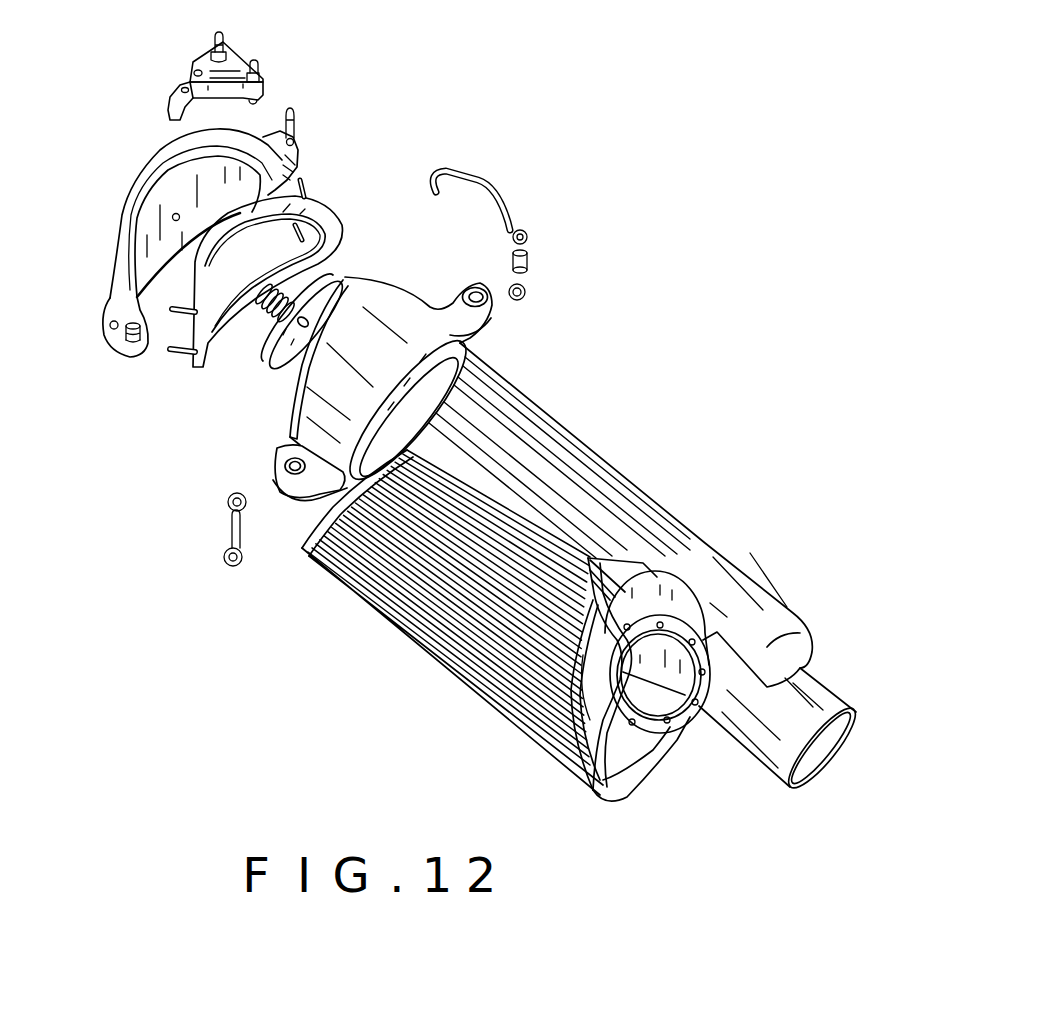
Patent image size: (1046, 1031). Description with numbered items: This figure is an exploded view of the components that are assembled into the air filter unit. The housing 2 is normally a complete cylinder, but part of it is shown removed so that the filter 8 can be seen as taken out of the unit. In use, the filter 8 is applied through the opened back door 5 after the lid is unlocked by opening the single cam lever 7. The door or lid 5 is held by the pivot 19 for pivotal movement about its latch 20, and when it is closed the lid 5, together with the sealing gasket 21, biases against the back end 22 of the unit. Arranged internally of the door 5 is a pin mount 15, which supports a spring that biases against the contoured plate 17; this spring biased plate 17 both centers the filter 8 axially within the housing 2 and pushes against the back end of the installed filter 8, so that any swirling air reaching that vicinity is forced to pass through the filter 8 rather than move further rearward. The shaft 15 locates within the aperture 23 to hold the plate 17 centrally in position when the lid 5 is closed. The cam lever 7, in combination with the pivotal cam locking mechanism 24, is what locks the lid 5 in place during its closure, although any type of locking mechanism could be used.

The housing 2 is at (637, 500).
The door 5 is at (123, 263).
The cam lever 7 is at (505, 202).
The filter 8 is at (450, 660).
The pin mount 15 is at (253, 313).
The contoured plate 17 is at (337, 280).
The pivot 19 is at (230, 533).
The latch 20 is at (125, 352).
The sealing gasket 21 is at (322, 218).
The back end 22 is at (288, 407).
The aperture 23 is at (176, 214).
The pivotal cam locking mechanism 24 is at (233, 60).